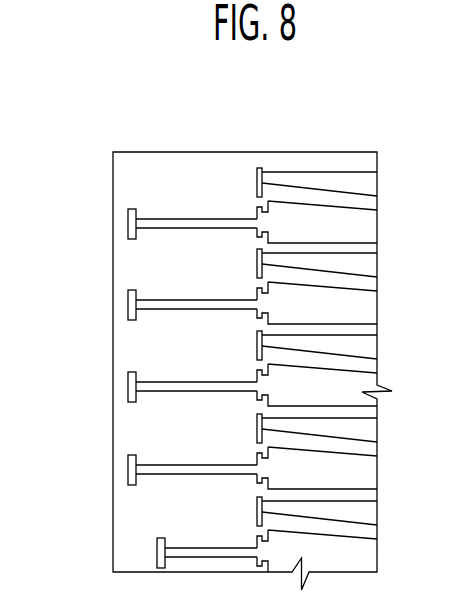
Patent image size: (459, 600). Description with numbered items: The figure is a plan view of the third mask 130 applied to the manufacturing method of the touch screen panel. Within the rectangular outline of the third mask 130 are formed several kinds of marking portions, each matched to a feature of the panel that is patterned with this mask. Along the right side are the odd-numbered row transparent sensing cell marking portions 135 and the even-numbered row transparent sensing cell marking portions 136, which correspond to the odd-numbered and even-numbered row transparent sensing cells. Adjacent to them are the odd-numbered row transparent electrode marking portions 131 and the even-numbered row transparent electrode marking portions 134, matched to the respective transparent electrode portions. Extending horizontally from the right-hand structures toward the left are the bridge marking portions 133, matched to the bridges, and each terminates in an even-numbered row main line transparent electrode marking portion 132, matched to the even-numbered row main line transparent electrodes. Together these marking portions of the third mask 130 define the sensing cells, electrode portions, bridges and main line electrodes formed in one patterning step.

The third mask 130 is at (363, 152).
The odd-numbered row transparent electrode marking portion 131 is at (259, 168).
The even-numbered row main line transparent electrode marking portion 132 is at (120, 223).
The bridge marking portion 133 is at (198, 221).
The even-numbered row transparent electrode marking portion 134 is at (268, 228).
The odd-numbered row transparent sensing cell marking portion 135 is at (288, 172).
The even-numbered row transparent sensing cell marking portion 136 is at (305, 205).